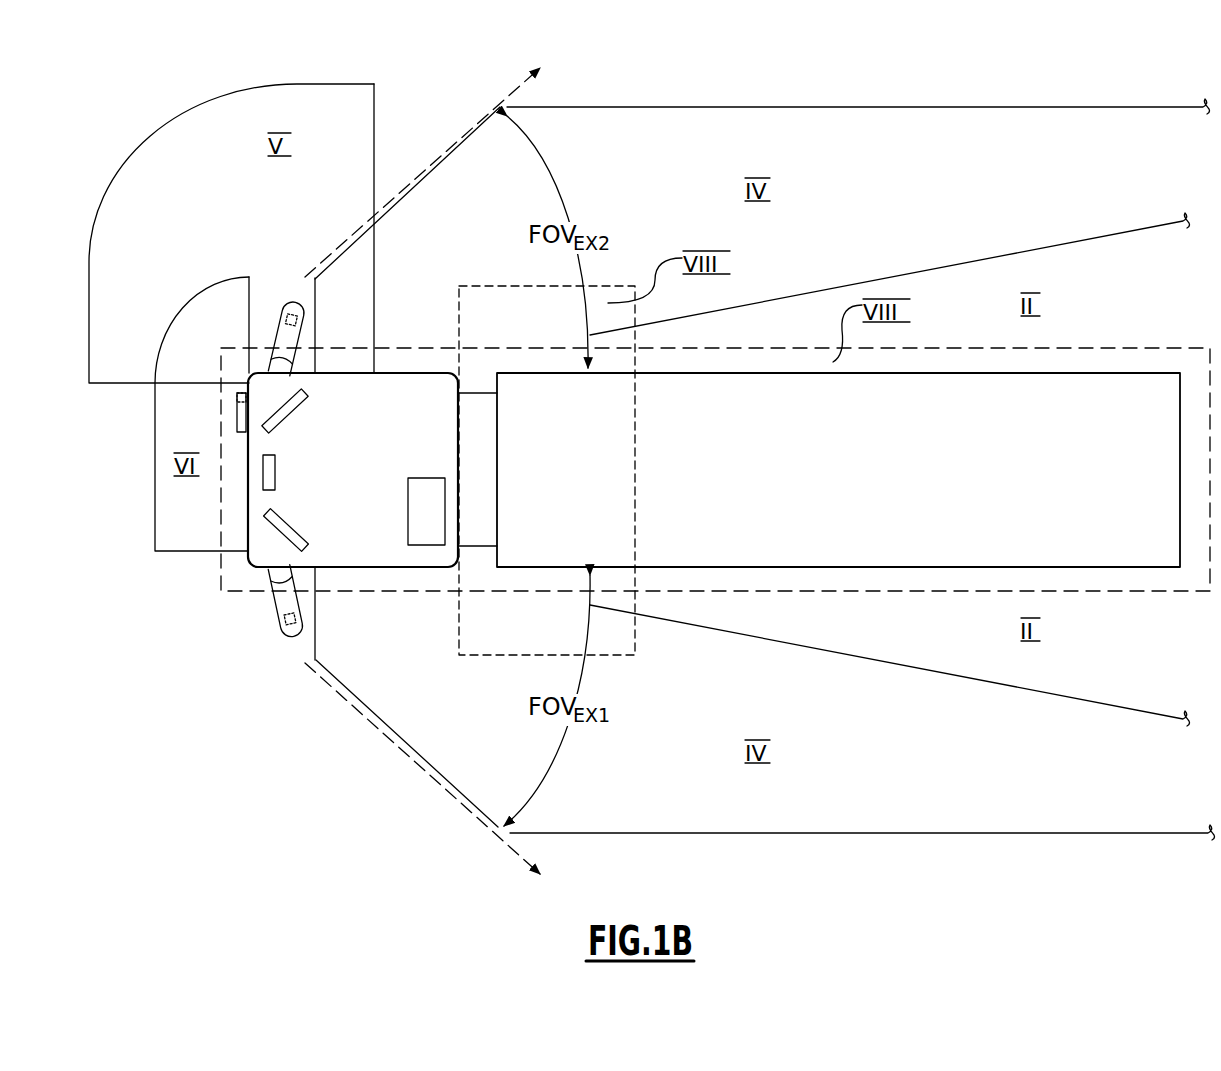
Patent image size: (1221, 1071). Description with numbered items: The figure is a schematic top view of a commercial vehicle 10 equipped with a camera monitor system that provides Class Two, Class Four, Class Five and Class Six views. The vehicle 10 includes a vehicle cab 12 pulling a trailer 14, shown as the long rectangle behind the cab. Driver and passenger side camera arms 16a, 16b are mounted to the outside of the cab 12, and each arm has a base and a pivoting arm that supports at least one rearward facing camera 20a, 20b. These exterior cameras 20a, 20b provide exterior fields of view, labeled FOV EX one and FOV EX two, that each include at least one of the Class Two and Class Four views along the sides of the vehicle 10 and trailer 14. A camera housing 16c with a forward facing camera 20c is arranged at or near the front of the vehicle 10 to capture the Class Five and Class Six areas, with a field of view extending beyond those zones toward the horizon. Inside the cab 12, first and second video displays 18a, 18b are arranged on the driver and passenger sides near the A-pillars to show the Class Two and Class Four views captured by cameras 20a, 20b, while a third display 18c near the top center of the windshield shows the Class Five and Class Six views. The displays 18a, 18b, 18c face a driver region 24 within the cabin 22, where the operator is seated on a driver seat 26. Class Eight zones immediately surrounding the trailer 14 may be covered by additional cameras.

The commercial vehicle 10 is at (226, 362).
The vehicle cab 12 is at (248, 562).
The trailer 14 is at (1090, 366).
The driver side camera arm 16a is at (280, 612).
The passenger side camera arm 16b is at (281, 337).
The camera housing 16c is at (236, 420).
The first video display 18a is at (292, 524).
The second video display 18b is at (292, 406).
The third display 18c is at (262, 478).
The rearward facing camera 20a is at (298, 624).
The rearward facing camera 20b is at (304, 315).
The forward facing camera 20c is at (237, 398).
The cabin 22 is at (400, 386).
The driver region 24 is at (400, 503).
The driver seat 26 is at (428, 490).